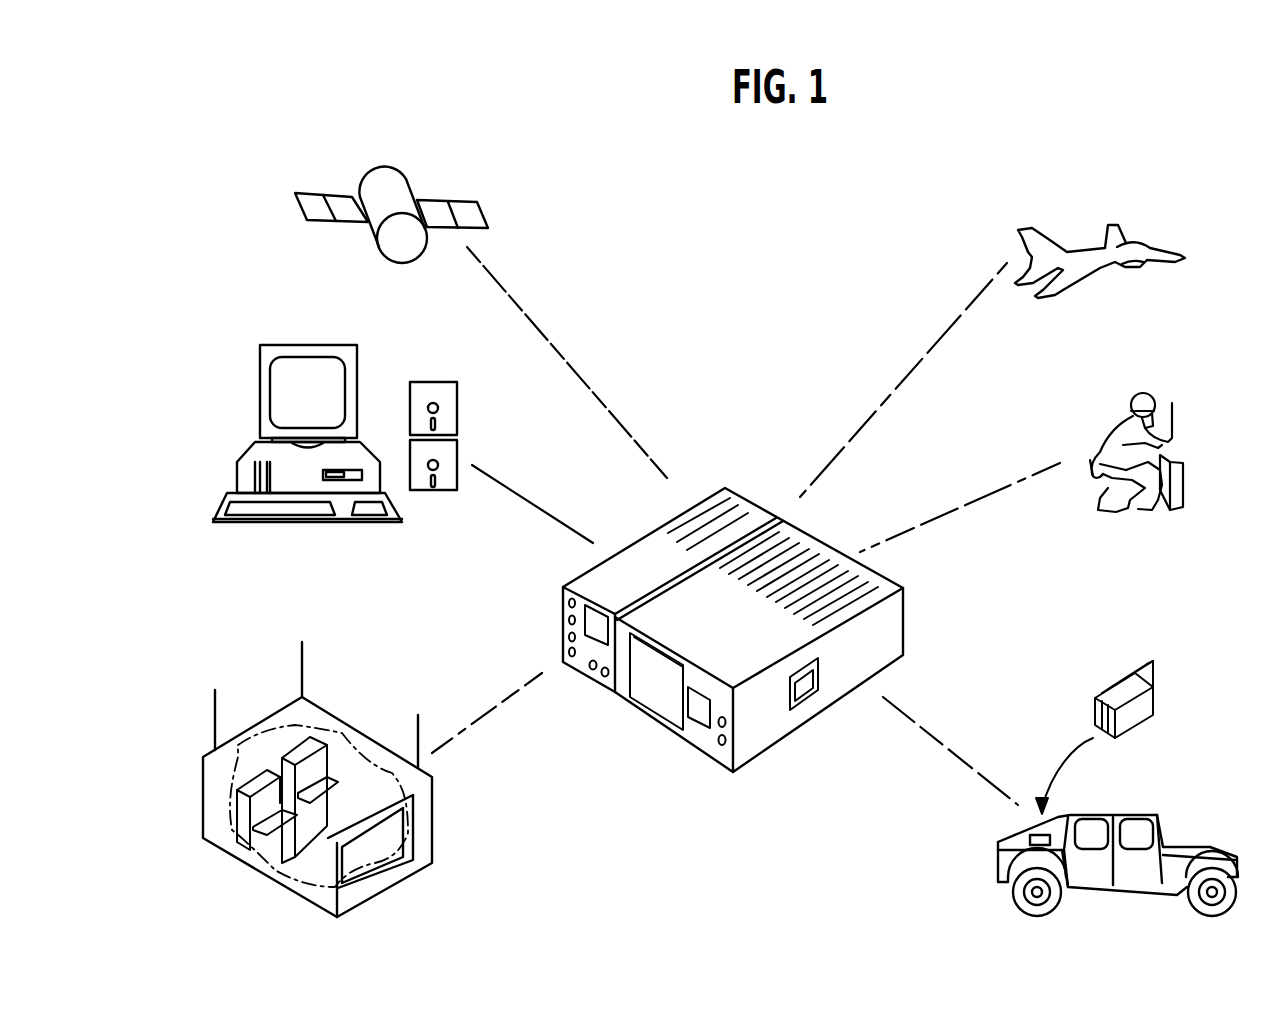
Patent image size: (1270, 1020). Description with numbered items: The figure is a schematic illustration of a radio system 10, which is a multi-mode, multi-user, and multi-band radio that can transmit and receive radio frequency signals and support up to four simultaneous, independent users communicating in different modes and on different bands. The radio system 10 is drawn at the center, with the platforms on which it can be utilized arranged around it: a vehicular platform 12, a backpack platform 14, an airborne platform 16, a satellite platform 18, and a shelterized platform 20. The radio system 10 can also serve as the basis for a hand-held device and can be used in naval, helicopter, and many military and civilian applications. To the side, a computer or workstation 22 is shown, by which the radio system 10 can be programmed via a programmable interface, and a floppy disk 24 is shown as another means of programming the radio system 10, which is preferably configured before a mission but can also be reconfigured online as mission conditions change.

The radio system 10 is at (907, 642).
The vehicular platform 12 is at (1147, 815).
The backpack platform 14 is at (1190, 480).
The airborne platform 16 is at (1165, 243).
The satellite platform 18 is at (385, 160).
The shelterized platform 20 is at (362, 730).
The workstation 22 is at (367, 448).
The floppy disk 24 is at (442, 382).